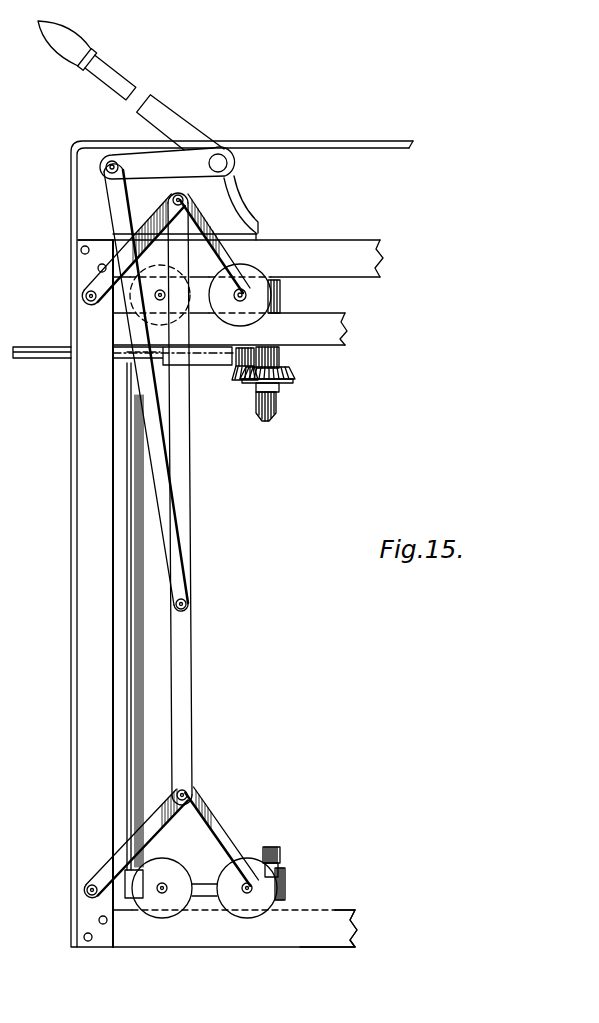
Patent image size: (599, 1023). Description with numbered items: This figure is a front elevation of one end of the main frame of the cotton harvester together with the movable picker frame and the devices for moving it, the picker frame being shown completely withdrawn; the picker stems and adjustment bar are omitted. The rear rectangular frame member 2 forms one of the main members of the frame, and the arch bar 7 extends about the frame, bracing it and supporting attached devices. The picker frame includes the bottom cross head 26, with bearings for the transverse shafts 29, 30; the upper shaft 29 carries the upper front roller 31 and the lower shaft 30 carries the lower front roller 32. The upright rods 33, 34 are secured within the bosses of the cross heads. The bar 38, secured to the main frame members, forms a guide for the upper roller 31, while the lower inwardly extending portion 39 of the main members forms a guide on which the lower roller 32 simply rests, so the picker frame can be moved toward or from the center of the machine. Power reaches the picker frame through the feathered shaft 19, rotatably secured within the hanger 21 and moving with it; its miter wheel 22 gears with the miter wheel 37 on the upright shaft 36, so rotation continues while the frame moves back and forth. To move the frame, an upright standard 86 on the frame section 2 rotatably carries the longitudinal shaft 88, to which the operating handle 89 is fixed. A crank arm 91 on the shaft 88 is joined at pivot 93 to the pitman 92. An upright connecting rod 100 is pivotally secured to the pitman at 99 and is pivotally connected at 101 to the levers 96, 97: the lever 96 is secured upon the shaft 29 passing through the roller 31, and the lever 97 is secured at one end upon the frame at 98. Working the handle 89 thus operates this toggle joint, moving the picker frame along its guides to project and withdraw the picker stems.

The rear rectangular frame member 2 is at (230, 590).
The arch bar 7 is at (70, 146).
The feathered shaft 19 is at (38, 359).
The hanger 21 is at (210, 366).
The miter wheel 22 is at (238, 381).
The bottom cross head 26 is at (208, 897).
The upper transverse shaft 29 is at (244, 290).
The lower transverse shaft 30 is at (248, 880).
The upper front roller 31 is at (205, 290).
The lower front roller 32 is at (213, 897).
The upright rod 33 is at (134, 690).
The upright rod 34 is at (281, 300).
The upright shaft 36 is at (282, 362).
The miter wheel 37 is at (291, 381).
The guide bar 38 is at (314, 323).
The lower guide 39 is at (334, 915).
The upright standard 86 is at (230, 208).
The longitudinal shaft 88 is at (221, 157).
The operating handle 89 is at (177, 118).
The crank arm 91 is at (167, 163).
The pitman 92 is at (156, 440).
The pivot 93 is at (107, 170).
The lever 96 is at (216, 253).
The lever 97 is at (143, 227).
The pivot 98 is at (86, 297).
The pivot 99 is at (187, 604).
The upright connecting rod 100 is at (184, 479).
The pivot 101 is at (184, 200).